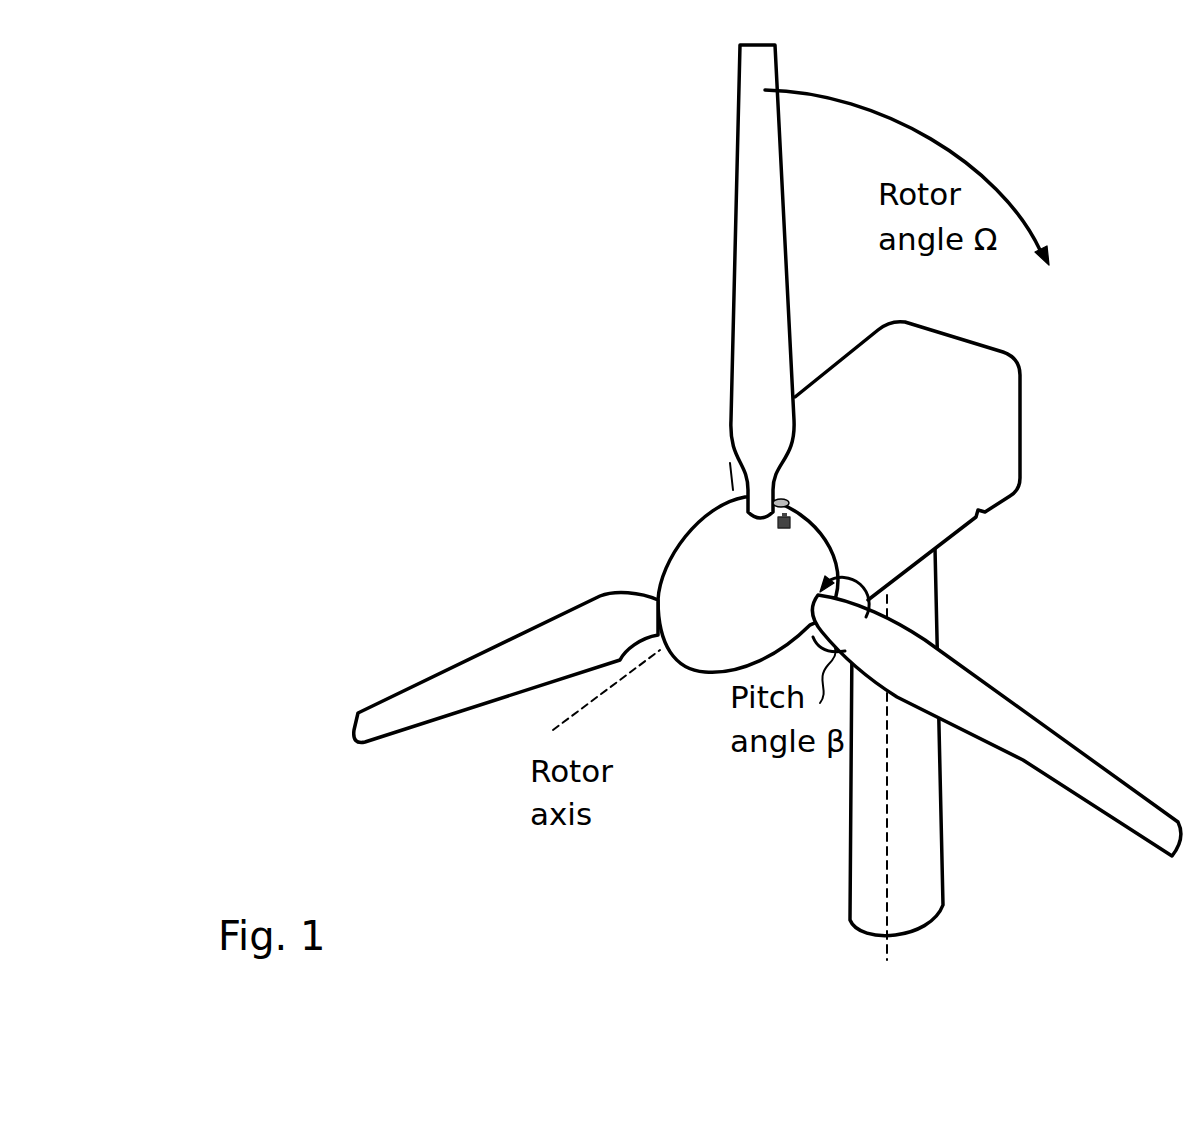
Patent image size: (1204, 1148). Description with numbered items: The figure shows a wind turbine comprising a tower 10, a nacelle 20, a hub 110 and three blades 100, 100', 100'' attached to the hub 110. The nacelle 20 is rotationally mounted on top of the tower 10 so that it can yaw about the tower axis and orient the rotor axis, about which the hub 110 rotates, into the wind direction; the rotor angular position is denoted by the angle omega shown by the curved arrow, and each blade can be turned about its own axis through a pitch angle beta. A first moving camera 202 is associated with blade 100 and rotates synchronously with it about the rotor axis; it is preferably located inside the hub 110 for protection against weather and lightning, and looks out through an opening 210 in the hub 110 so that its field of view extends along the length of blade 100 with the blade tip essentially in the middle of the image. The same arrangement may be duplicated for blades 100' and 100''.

The tower 10 is at (925, 867).
The nacelle 20 is at (958, 468).
The blade 100 is at (715, 281).
The blade 100' is at (506, 668).
The blade 100'' is at (1002, 725).
The hub 110 is at (728, 526).
The first moving camera 202 is at (798, 533).
The opening 210 is at (788, 500).